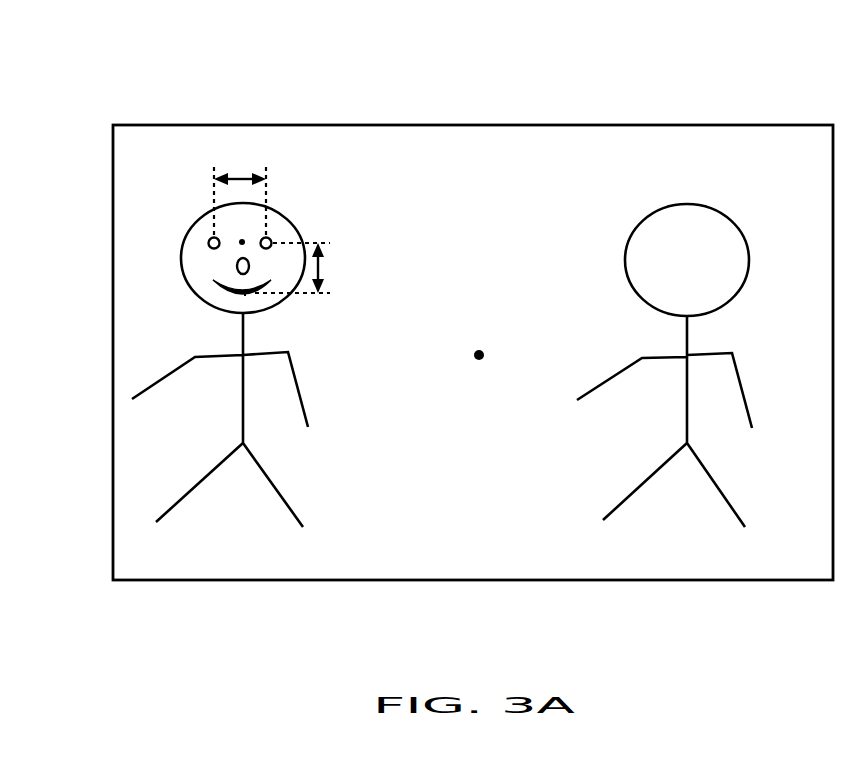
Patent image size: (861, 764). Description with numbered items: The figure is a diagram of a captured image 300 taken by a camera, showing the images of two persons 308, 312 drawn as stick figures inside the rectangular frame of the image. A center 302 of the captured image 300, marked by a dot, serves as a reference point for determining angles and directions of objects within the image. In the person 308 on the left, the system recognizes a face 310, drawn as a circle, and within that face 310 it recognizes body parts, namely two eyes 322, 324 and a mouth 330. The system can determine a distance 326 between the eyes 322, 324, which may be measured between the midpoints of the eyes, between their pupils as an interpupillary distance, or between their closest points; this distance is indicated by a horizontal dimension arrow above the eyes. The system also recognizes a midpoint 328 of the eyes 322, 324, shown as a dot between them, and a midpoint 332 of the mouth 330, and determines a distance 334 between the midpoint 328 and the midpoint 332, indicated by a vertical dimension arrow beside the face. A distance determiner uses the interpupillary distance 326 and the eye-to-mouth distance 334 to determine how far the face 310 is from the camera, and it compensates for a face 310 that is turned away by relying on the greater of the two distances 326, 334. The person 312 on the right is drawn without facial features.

The captured image 300 is at (320, 124).
The center 302 is at (479, 355).
The person 308 is at (233, 522).
The face 310 is at (364, 173).
The person 312 is at (697, 524).
The eye 322 is at (208, 243).
The eye 324 is at (272, 241).
The distance between the eyes 326 is at (239, 176).
The midpoint of the eyes 328 is at (242, 242).
The mouth 330 is at (213, 292).
The midpoint of the mouth 332 is at (247, 293).
The distance between the midpoint of the eyes and the midpoint of the mouth 334 is at (318, 258).